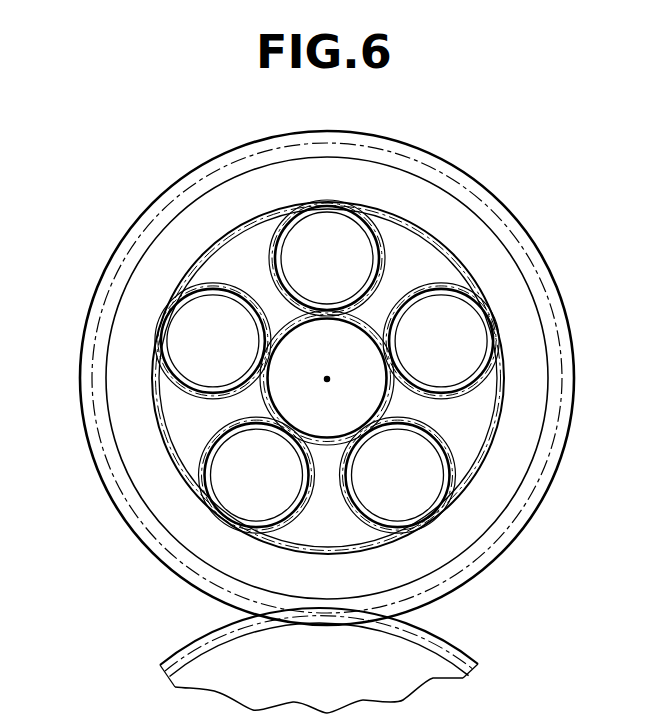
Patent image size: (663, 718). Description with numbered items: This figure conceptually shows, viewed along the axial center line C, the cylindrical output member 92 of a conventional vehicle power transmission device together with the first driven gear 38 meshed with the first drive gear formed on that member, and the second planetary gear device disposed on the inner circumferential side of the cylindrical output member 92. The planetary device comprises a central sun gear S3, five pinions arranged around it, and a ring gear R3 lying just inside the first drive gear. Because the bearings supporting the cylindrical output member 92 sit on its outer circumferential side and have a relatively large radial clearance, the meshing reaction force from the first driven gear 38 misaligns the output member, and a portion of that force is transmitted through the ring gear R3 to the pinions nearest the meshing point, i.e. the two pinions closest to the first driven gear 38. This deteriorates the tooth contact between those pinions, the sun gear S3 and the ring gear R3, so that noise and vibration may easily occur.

The cylindrical output member 92 is at (470, 228).
The ring gear R3 is at (492, 553).
The sun gear S3 is at (323, 430).
The axial center line C is at (327, 378).
The first driven gear 38 is at (452, 642).